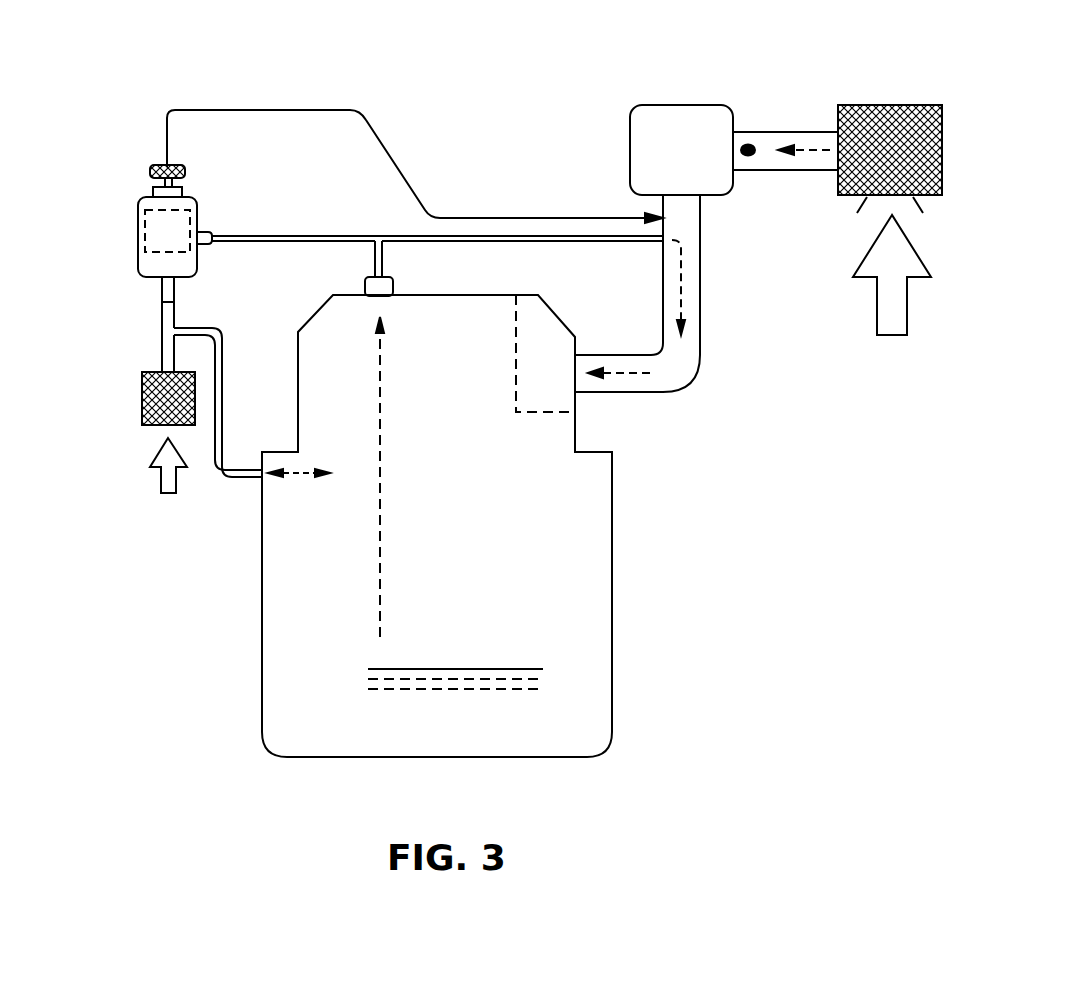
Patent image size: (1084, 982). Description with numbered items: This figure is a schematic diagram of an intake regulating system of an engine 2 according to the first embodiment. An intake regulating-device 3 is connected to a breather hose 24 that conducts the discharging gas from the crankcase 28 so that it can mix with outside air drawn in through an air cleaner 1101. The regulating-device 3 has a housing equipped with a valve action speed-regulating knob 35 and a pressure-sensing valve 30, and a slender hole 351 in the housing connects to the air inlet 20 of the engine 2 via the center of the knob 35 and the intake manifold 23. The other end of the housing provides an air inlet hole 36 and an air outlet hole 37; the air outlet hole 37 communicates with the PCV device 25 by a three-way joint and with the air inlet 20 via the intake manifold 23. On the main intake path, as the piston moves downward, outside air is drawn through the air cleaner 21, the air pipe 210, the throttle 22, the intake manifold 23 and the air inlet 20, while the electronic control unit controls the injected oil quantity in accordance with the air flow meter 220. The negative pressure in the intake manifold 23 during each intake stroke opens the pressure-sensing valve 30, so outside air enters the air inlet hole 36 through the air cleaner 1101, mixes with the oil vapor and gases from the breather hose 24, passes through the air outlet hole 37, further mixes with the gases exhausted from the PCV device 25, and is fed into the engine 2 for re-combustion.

The engine 2 is at (650, 577).
The air inlet 20 is at (538, 322).
The air cleaner 21 is at (892, 108).
The air pipe 210 is at (787, 162).
The throttle 22 is at (688, 118).
The air flow meter 220 is at (750, 145).
The intake manifold 23 is at (685, 353).
The breather hose 24 is at (222, 366).
The PCV device 25 is at (385, 283).
The crankcase 28 is at (312, 604).
The intake regulating-device 3 is at (138, 275).
The pressure-sensing valve 30 is at (145, 236).
The valve action speed-regulating knob 35 is at (155, 167).
The slender hole 351 is at (184, 172).
The air inlet hole 36 is at (173, 290).
The air outlet hole 37 is at (205, 235).
The air cleaner 1101 is at (140, 373).